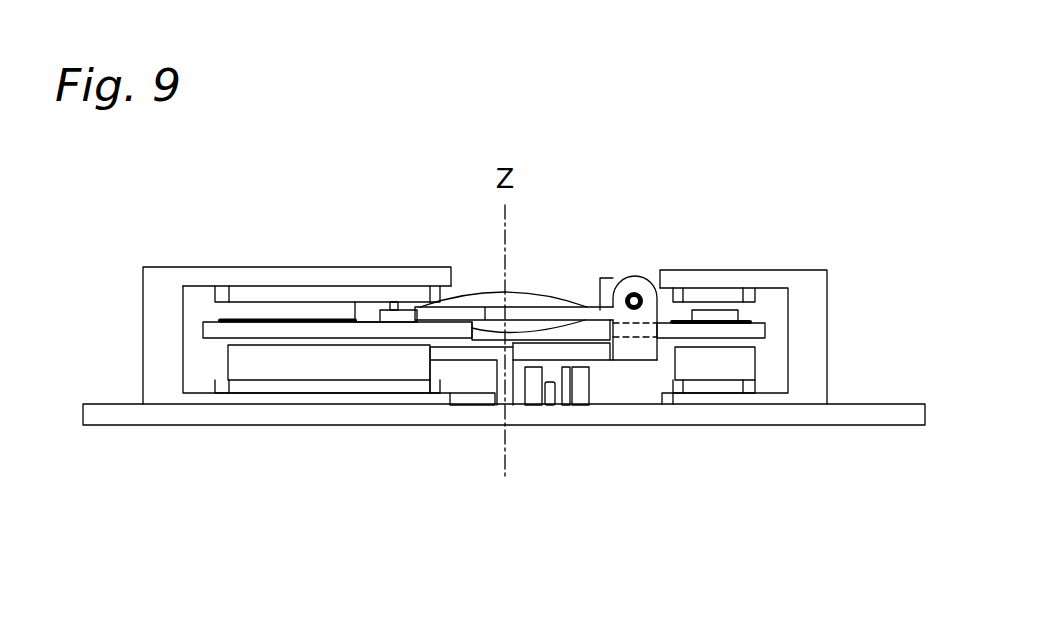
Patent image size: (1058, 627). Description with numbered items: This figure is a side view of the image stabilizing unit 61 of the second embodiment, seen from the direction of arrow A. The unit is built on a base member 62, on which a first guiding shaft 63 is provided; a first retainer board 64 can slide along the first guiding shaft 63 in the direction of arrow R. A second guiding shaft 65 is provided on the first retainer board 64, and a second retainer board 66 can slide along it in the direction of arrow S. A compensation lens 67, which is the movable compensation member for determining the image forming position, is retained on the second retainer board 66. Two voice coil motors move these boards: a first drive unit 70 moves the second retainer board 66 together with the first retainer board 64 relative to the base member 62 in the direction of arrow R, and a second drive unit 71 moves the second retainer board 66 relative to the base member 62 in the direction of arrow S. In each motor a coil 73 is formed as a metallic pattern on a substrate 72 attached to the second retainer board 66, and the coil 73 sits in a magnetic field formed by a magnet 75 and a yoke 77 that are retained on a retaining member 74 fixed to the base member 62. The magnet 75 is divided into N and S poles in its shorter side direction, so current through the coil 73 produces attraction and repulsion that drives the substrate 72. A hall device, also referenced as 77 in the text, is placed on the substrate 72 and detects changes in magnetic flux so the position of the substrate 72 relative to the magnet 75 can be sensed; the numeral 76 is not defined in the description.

The image stabilizing unit 61 is at (188, 241).
The base member 62 is at (583, 415).
The first guiding shaft 63 is at (478, 395).
The first retainer board 64 is at (462, 363).
The second guiding shaft 65 is at (634, 291).
The second retainer board 66 is at (585, 307).
The compensation lens 67 is at (482, 294).
The first drive unit 70 is at (707, 270).
The second drive unit 71 is at (313, 266).
The substrate 72 is at (763, 320).
The coil 73 is at (283, 319).
The retaining member 74 is at (220, 266).
The magnet 75 is at (688, 289).
The yoke plate 76 is at (339, 291).
The yoke 77 is at (395, 301).